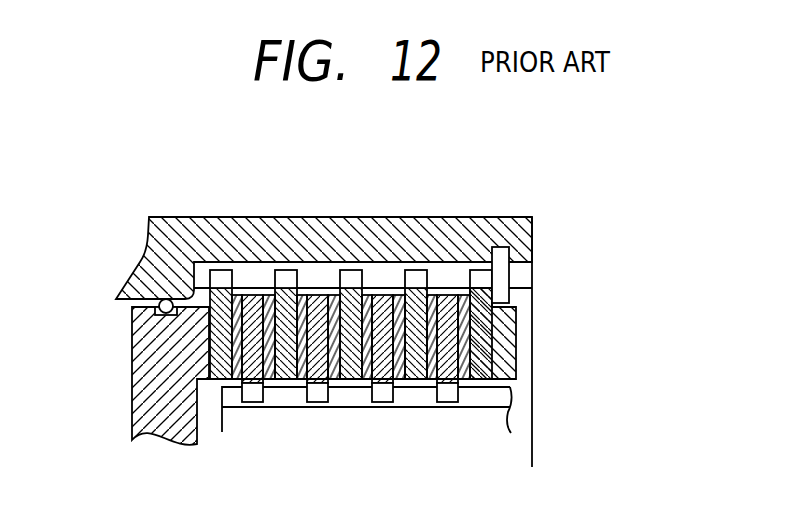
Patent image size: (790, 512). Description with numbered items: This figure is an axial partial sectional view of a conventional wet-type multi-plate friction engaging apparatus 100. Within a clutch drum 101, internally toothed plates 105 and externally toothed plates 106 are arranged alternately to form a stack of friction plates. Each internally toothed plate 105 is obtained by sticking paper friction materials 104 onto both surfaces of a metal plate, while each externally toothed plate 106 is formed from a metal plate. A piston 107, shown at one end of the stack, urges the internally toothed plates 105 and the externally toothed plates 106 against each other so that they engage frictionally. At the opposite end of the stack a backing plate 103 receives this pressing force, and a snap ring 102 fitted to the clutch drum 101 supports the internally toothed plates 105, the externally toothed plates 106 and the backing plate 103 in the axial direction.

The wet-type multi-plate friction engaging apparatus 100 is at (542, 188).
The clutch drum 101 is at (300, 233).
The snap ring 102 is at (503, 273).
The backing plate 103 is at (503, 349).
The paper friction material 104 is at (462, 367).
The internally toothed plate 105 is at (448, 393).
The externally toothed plate 106 is at (280, 372).
The piston 107 is at (140, 393).